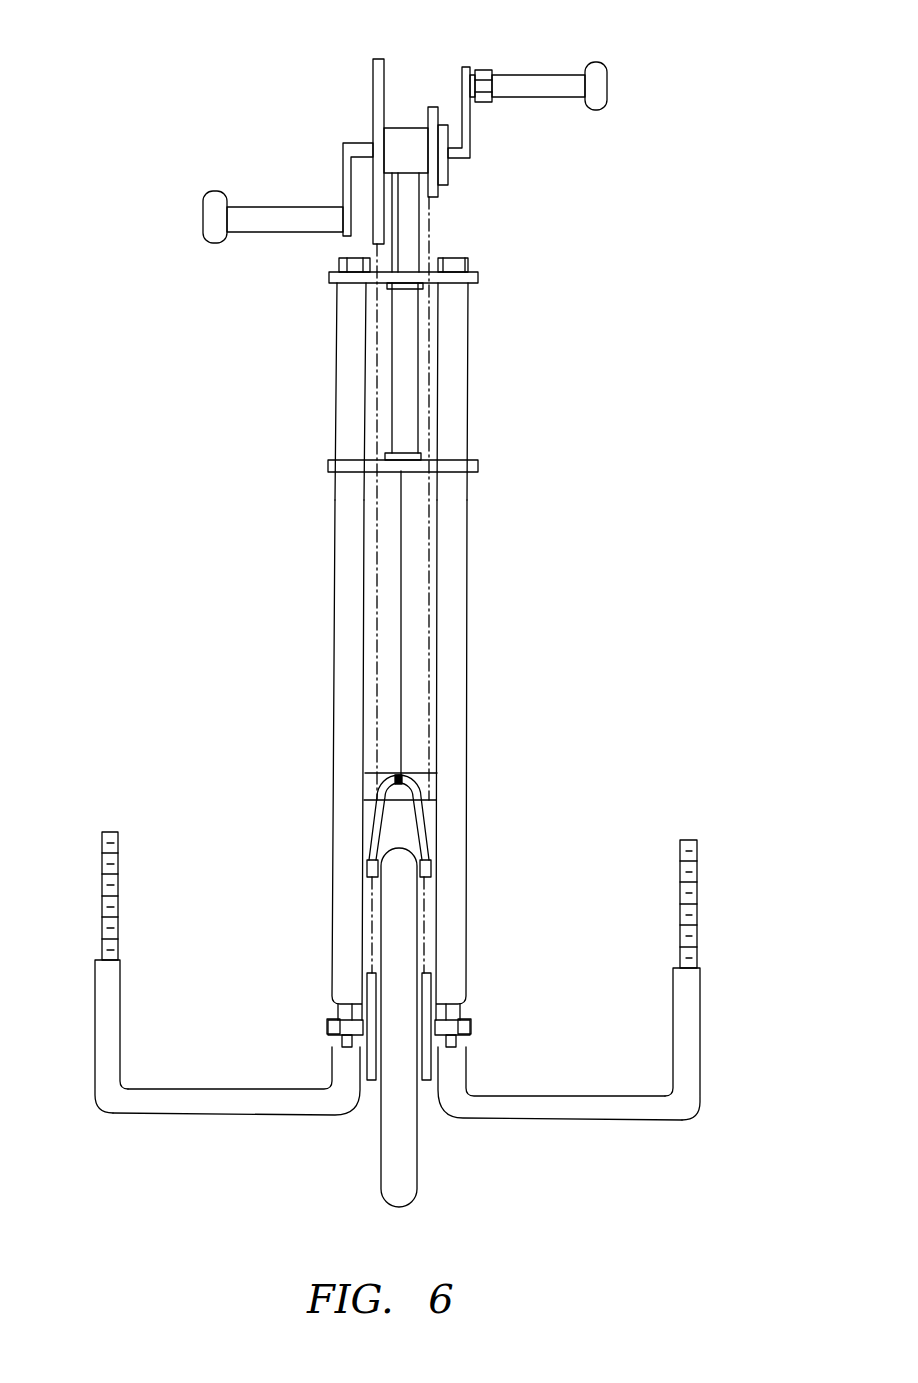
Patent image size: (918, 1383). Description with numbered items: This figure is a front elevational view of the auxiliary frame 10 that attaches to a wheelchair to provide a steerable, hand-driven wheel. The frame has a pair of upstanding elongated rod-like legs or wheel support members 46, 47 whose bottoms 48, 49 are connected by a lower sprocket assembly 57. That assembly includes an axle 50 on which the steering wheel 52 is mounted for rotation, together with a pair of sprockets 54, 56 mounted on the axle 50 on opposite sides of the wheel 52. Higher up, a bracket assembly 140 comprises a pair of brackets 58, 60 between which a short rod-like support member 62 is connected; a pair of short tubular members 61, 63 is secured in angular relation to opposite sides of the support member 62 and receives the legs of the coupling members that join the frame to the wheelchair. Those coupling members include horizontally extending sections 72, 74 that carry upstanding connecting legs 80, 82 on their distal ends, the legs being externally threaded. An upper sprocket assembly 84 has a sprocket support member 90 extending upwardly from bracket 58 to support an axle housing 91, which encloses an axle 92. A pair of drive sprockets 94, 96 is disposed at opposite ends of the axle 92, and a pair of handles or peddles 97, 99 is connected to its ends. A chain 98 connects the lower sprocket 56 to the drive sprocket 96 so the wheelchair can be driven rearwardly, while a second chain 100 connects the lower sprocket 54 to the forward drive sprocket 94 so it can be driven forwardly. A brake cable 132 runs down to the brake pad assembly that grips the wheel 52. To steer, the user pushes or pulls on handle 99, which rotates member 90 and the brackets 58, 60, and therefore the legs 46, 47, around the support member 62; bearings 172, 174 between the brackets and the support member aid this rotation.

The auxiliary frame 10 is at (670, 752).
The wheel support member 46 is at (333, 852).
The wheel support member 47 is at (467, 692).
The bottom of leg 48 is at (350, 953).
The bottom of leg 49 is at (453, 948).
The axle 50 is at (328, 1028).
The steering wheel 52 is at (398, 1165).
The sprocket 54 is at (370, 1065).
The sprocket 56 is at (428, 1065).
The lower sprocket assembly 57 is at (485, 978).
The bracket 58 is at (473, 275).
The bracket 60 is at (473, 462).
The tubular member 61 is at (469, 423).
The support member 62 is at (410, 423).
The tubular member 63 is at (345, 321).
The horizontally extending section 72 is at (575, 1103).
The horizontally extending section 74 is at (225, 1102).
The connecting leg 80 is at (100, 1037).
The connecting leg 82 is at (685, 1050).
The upper sprocket assembly 84 is at (418, 76).
The sprocket support member 90 is at (405, 255).
The axle housing 91 is at (454, 155).
The axle 92 is at (360, 147).
The drive sprocket 94 is at (372, 129).
The drive sprocket 96 is at (437, 190).
The handle 97 is at (257, 230).
The chain 98 is at (428, 601).
The handle 99 is at (555, 74).
The chain 100 is at (375, 550).
The cable 132 is at (400, 712).
The bracket assembly 140 is at (323, 397).
The bearing 172 is at (407, 289).
The bearing 174 is at (397, 460).